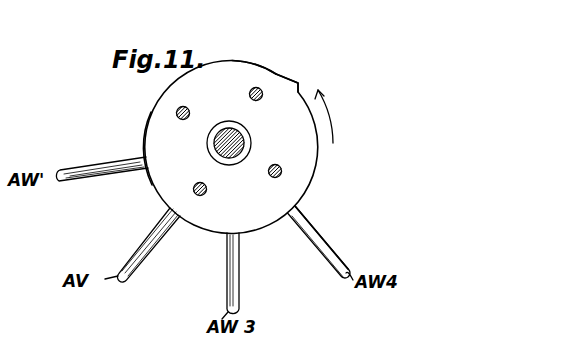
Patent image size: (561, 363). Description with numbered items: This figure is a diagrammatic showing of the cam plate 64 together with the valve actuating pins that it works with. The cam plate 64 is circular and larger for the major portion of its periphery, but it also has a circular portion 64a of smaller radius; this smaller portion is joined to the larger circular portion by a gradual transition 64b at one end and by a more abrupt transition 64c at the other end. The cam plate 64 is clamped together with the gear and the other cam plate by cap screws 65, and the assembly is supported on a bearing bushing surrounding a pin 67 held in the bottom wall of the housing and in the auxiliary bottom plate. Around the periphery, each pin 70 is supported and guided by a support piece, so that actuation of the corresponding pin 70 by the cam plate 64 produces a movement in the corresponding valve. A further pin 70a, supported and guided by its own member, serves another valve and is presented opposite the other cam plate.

The cam plate 64 is at (306, 158).
The circular portion of smaller radius 64a is at (254, 65).
The gradual transition 64b is at (299, 82).
The abrupt transition 64c is at (146, 154).
The cap screws 65 is at (262, 101).
The pin 67 is at (222, 148).
The pin 70 is at (126, 172).
The pin 70a is at (150, 250).